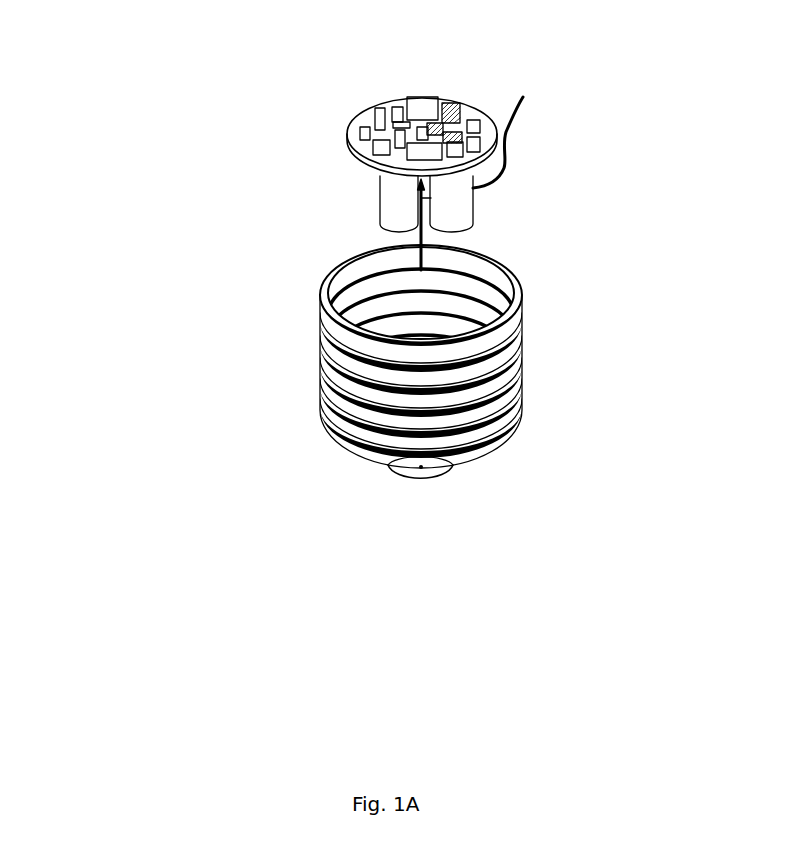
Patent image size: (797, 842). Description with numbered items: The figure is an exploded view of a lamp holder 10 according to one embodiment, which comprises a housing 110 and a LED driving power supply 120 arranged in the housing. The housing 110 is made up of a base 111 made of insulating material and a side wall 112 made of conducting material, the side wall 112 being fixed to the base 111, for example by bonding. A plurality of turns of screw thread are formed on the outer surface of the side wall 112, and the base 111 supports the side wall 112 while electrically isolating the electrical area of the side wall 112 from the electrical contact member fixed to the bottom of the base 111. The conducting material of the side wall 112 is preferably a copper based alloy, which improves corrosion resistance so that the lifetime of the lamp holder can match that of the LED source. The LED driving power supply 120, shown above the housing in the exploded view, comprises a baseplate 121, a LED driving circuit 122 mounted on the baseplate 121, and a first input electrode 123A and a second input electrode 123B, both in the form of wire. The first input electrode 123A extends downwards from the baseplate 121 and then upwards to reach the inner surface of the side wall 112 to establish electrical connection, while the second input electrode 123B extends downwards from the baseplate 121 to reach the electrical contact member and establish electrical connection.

The lamp holder 10 is at (590, 607).
The housing 110 is at (316, 371).
The base 111 is at (438, 482).
The side wall 112 is at (493, 402).
The LED driving power supply 120 is at (332, 153).
The baseplate 121 is at (360, 118).
The LED driving circuit 122 is at (425, 90).
The first input electrode 123A is at (508, 145).
The second input electrode 123B is at (422, 233).